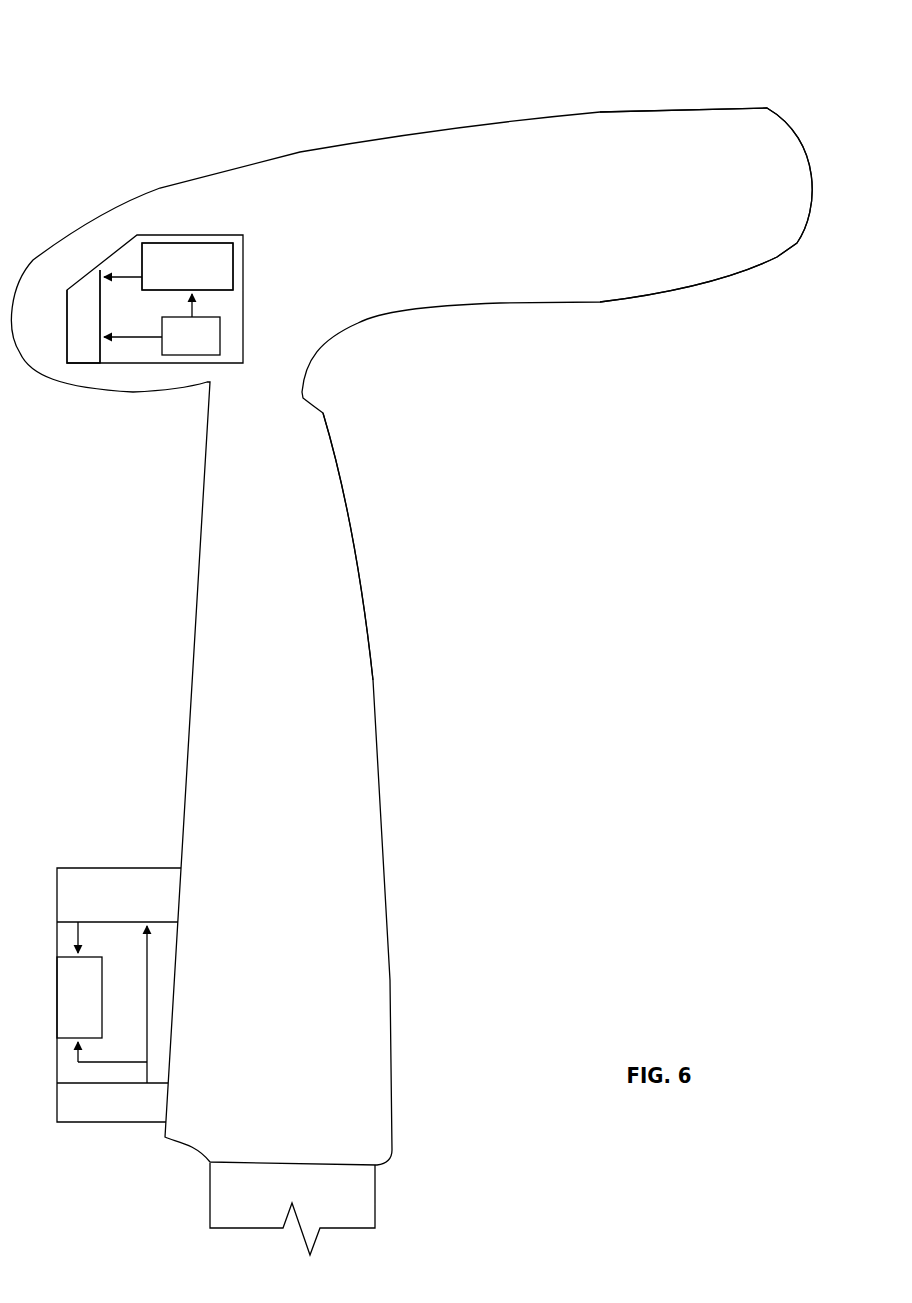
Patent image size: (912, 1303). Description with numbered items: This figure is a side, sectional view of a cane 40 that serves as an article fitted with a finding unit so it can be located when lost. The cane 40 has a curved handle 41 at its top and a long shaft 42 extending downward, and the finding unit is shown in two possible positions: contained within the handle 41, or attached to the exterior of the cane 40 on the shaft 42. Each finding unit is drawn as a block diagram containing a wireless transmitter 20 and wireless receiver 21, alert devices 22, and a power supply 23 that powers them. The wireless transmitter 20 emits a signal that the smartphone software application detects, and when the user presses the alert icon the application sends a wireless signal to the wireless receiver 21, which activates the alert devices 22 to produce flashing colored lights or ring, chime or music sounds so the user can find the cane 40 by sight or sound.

The wireless transmitter 20 is at (187, 266).
The wireless receiver 21 is at (187, 266).
The alert devices 22 is at (83, 316).
The power supply 23 is at (191, 336).
The cane 40 is at (737, 58).
The handle 41 is at (567, 277).
The shaft 42 is at (368, 627).